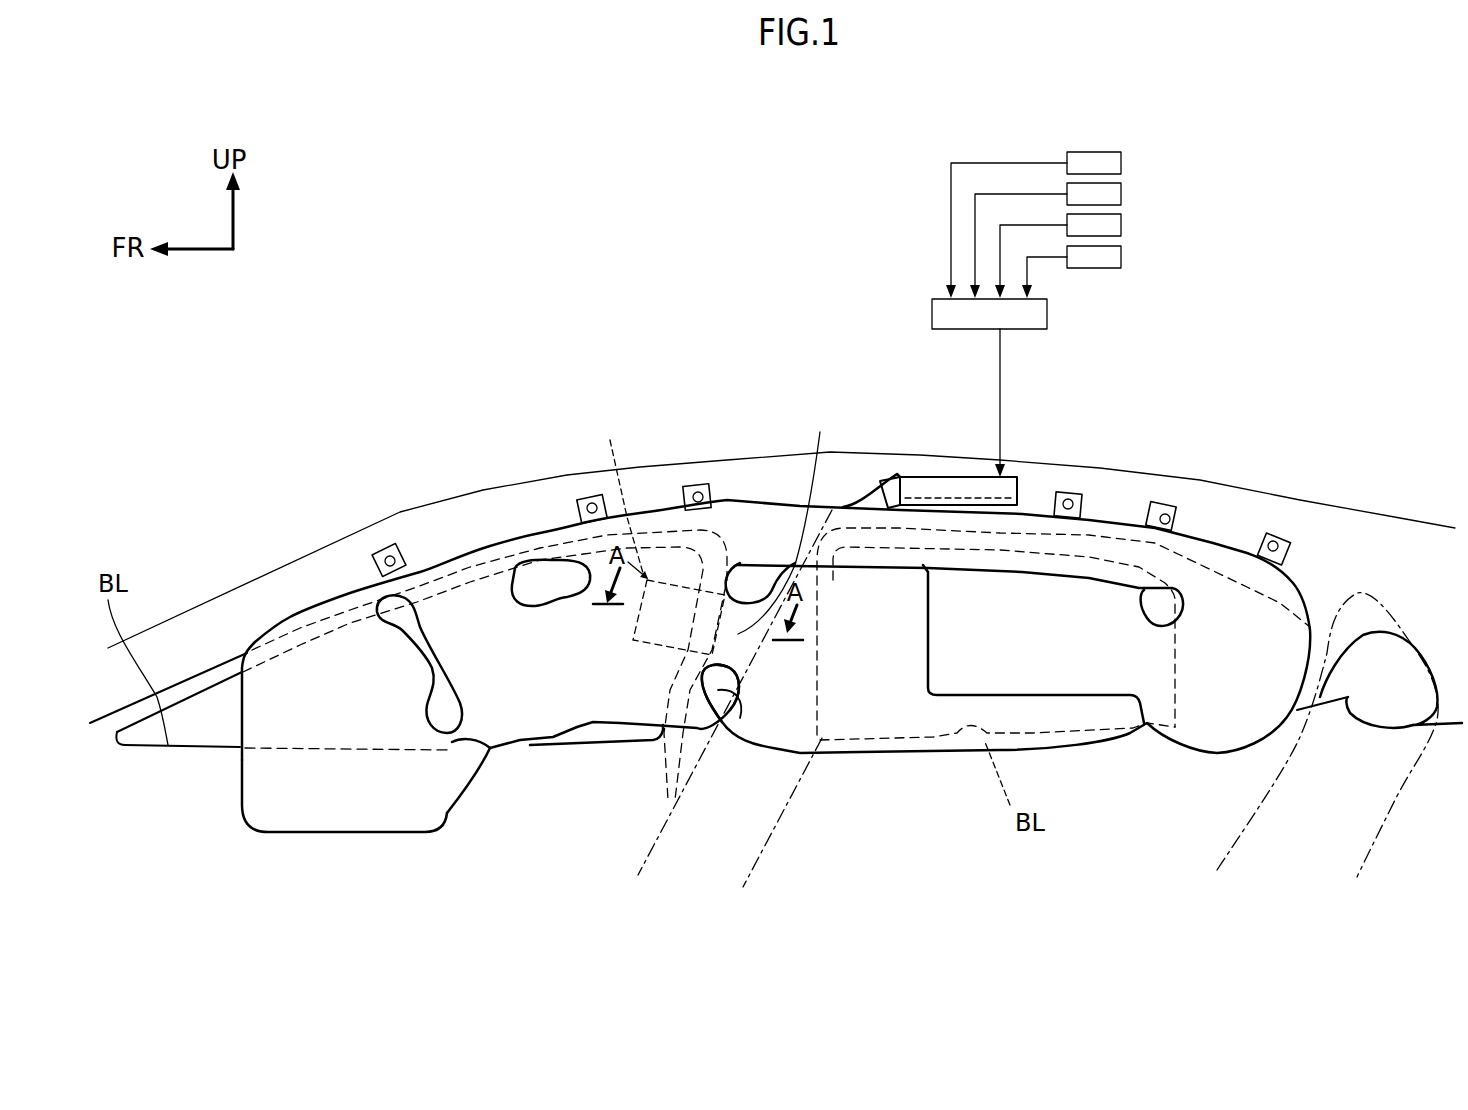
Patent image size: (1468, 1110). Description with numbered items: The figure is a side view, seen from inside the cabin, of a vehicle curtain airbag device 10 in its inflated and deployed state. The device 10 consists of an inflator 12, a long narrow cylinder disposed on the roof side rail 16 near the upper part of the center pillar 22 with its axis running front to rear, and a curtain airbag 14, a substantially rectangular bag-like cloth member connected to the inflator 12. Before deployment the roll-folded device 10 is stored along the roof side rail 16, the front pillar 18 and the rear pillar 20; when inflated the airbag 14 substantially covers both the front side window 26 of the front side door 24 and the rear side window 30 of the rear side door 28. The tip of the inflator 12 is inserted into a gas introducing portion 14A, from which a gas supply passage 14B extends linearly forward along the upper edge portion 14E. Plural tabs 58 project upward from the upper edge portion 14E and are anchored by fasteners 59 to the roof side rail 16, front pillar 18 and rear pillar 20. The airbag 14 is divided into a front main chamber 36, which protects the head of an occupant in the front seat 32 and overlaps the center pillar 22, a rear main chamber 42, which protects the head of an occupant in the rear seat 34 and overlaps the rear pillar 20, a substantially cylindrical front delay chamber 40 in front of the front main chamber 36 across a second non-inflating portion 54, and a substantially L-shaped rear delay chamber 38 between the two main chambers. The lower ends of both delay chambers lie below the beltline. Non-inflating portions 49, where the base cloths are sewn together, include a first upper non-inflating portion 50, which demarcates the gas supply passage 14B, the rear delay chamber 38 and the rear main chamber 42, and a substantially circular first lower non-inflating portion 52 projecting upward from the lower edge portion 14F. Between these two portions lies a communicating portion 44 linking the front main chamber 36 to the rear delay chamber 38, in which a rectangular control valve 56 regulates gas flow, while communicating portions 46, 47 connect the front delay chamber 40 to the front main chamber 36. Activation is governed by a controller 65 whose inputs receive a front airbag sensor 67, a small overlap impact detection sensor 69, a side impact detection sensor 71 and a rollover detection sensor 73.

The vehicle curtain airbag device 10 is at (506, 283).
The inflator 12 is at (950, 473).
The curtain airbag 14 is at (754, 488).
The gas introducing portion 14A is at (879, 496).
The gas supply passage 14B is at (752, 582).
The upper edge portion 14E is at (507, 537).
The lower edge portion 14F is at (560, 735).
The roof side rail 16 is at (647, 488).
The front pillar 18 is at (240, 600).
The rear pillar 20 is at (1393, 543).
The center pillar 22 is at (693, 758).
The front side door 24 is at (175, 668).
The front side window 26 is at (180, 722).
The rear side door 28 is at (1320, 612).
The rear side window 30 is at (1148, 726).
The front seat 32 is at (630, 862).
The rear seat 34 is at (1390, 835).
The front main chamber 36 is at (540, 657).
The rear delay chamber 38 is at (860, 640).
The front delay chamber 40 is at (310, 717).
The rear main chamber 42 is at (1237, 683).
The communicating portion 44 is at (786, 518).
The communicating portion 46 is at (483, 750).
The communicating portion 47 is at (392, 627).
The non-inflating portions 49 is at (522, 610).
The first upper non-inflating portion 50 is at (727, 593).
The first lower non-inflating portion 52 is at (727, 718).
The second non-inflating portion 54 is at (345, 640).
The control valve 56 is at (643, 573).
The tabs 58 is at (380, 548).
The fasteners 59 is at (392, 548).
The controller 65 is at (1047, 314).
The front airbag sensor 67 is at (1121, 163).
The small overlap impact detection sensor 69 is at (1121, 194).
The side impact detection sensor 71 is at (1121, 225).
The rollover detection sensor 73 is at (1121, 257).